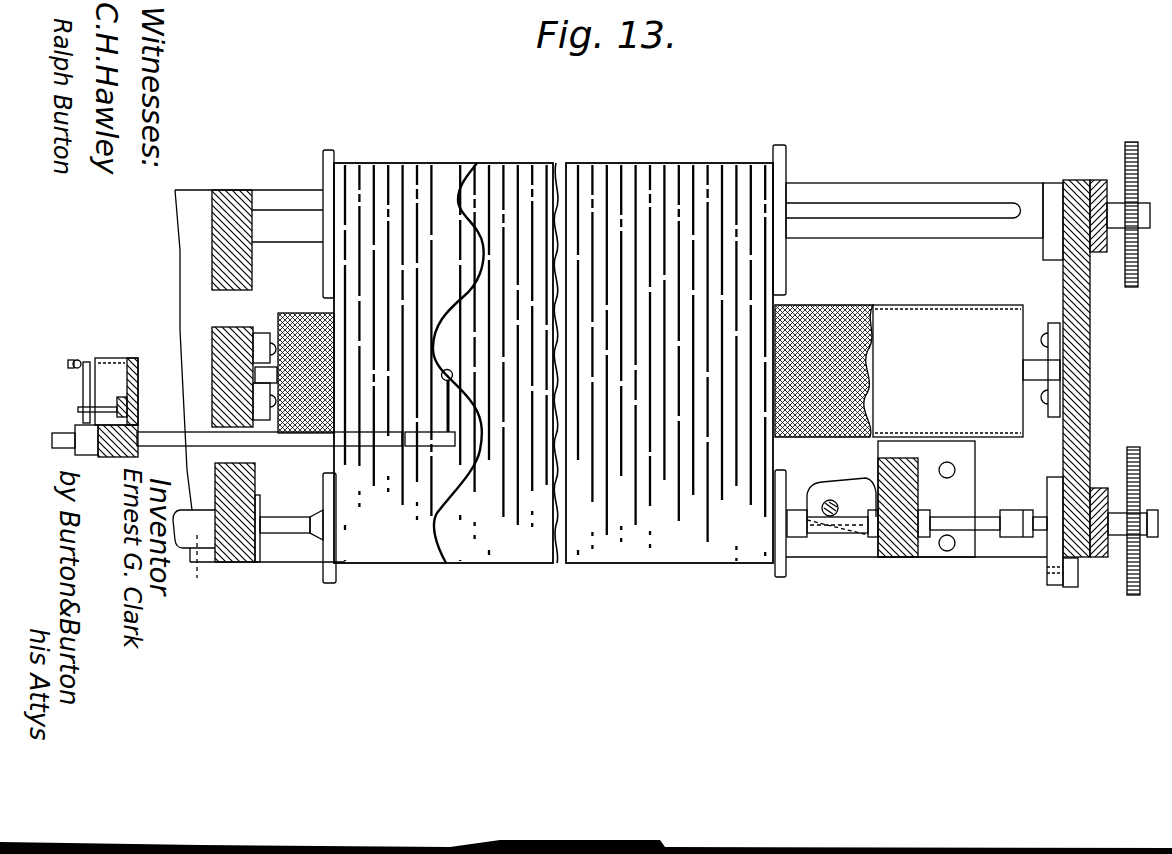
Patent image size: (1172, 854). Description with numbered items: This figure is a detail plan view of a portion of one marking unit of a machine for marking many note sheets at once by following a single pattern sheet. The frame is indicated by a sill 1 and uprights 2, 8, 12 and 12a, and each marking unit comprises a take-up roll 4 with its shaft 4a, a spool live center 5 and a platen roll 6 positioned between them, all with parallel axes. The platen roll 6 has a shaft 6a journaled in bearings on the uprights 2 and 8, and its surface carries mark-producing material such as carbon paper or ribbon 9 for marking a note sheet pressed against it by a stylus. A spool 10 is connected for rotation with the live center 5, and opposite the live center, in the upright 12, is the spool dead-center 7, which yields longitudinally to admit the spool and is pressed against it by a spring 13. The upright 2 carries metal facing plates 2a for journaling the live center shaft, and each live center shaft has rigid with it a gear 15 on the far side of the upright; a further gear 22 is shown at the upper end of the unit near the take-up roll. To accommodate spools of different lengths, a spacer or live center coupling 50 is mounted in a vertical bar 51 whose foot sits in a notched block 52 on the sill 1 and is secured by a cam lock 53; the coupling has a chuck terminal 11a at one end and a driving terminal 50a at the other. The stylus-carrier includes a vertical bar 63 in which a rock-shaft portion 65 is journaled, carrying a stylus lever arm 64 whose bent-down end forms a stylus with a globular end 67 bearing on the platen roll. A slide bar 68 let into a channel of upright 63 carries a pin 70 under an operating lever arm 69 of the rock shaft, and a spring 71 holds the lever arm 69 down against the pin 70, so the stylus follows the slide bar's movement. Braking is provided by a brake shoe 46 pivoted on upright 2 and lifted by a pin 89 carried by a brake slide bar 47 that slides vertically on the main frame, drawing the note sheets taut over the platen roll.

The sill 1 is at (297, 563).
The upright 2 is at (1090, 390).
The metal facing plate 2a is at (1096, 180).
The take-up roll 4 is at (330, 163).
The shaft 4a is at (268, 212).
The spool live center 5 is at (1040, 532).
The platen roll 6 is at (960, 318).
The platen roll shaft 6a is at (267, 333).
The spool dead-center 7 is at (286, 532).
The upright 8 is at (213, 367).
The carbon paper or ribbon 9 is at (855, 318).
The spool 10 is at (330, 583).
The chuck terminal 11a is at (1013, 537).
The upright 12 is at (245, 563).
The upright 12a is at (233, 190).
The spring 13 is at (194, 561).
The gear 15 is at (1130, 597).
The gear 22 is at (1131, 140).
The brake shoe 46 is at (1048, 577).
The brake slide bar 47 is at (1066, 588).
The spacer or live center coupling 50 is at (986, 517).
The driving terminal 50a is at (795, 512).
The vertical bar 51 is at (910, 560).
The notched block 52 is at (856, 560).
The cam lock 53 is at (843, 490).
The vertical bar 63 is at (118, 457).
The stylus lever arm 64 is at (448, 408).
The rock-shaft portion 65 is at (316, 447).
The globular end 67 is at (453, 373).
The slide bar 68 is at (126, 405).
The operating lever arm 69 is at (83, 397).
The pin 70 is at (78, 410).
The spring 71 is at (82, 362).
The pin 89 is at (1043, 566).